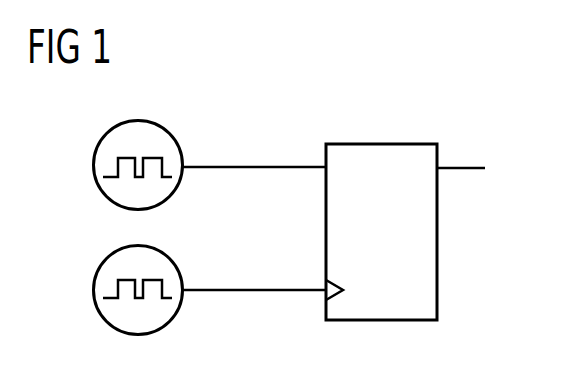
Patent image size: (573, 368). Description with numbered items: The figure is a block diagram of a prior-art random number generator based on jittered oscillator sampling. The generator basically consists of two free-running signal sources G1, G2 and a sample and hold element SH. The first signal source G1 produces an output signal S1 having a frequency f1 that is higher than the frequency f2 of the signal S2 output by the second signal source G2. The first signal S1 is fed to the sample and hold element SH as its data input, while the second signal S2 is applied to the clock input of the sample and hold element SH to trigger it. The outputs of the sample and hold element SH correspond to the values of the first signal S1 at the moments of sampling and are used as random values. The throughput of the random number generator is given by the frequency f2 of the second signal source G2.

The first signal source G1 is at (94, 167).
The second signal source G2 is at (94, 290).
The first signal S1 is at (254, 150).
The second signal S2 is at (254, 273).
The sample and hold element SH is at (384, 144).